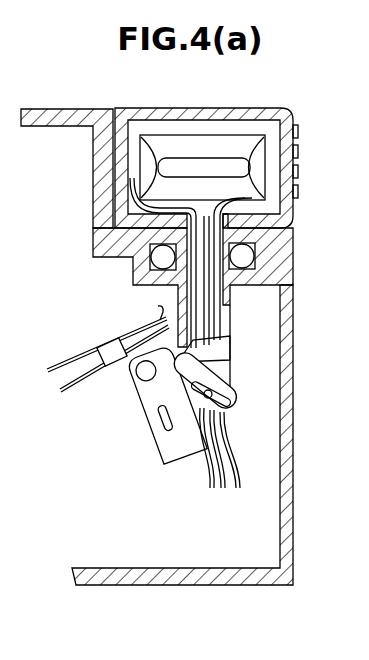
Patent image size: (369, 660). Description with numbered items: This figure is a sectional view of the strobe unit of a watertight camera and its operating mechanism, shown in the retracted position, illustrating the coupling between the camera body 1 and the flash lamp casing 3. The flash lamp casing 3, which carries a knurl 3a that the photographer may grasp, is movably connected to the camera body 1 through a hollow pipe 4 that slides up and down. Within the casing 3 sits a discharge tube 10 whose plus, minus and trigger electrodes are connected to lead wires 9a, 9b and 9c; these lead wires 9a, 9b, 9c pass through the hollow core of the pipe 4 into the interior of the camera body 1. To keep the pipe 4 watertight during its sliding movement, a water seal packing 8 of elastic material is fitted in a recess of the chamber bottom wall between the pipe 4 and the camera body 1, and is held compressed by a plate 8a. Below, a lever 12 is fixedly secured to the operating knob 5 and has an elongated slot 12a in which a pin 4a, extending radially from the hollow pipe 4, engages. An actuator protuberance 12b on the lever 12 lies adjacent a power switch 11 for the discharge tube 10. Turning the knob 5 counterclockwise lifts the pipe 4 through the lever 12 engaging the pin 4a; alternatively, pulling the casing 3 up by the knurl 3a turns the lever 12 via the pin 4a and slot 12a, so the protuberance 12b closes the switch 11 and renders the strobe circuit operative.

The camera body 1 is at (280, 497).
The flash lamp casing 3 is at (268, 112).
The knurl 3a is at (298, 128).
The hollow pipe 4 is at (232, 358).
The pin 4a is at (182, 388).
The operating knob 5 is at (160, 430).
The water seal packing 8 is at (252, 257).
The plate 8a is at (284, 230).
The lead wire 9a is at (210, 335).
The lead wire 9b is at (200, 310).
The lead wire 9c is at (222, 296).
The discharge tube 10 is at (214, 163).
The power switch 11 is at (126, 336).
The lever 12 is at (240, 412).
The elongated slot 12a is at (240, 404).
The actuator protuberance 12b is at (205, 385).